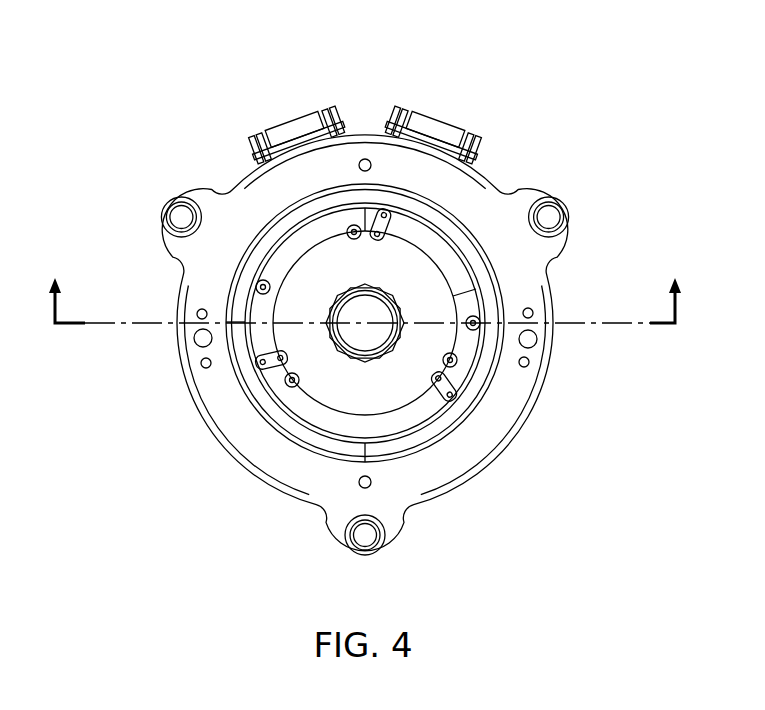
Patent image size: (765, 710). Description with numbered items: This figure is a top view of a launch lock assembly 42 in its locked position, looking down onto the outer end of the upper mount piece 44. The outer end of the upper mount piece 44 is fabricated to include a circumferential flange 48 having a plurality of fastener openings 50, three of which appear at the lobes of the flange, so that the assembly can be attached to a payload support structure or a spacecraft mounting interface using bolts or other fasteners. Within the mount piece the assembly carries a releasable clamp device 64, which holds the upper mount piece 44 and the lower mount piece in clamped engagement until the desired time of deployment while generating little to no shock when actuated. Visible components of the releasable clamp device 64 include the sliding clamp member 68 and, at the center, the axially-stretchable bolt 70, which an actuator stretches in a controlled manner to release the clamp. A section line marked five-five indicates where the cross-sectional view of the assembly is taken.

The launch lock assembly 42 is at (103, 103).
The upper mount piece 44 is at (498, 184).
The circumferential flange 48 is at (211, 403).
The fastener openings 50 is at (180, 214).
The releasable clamp device 64 is at (280, 266).
The sliding clamp member 68 is at (448, 252).
The axially-stretchable bolt 70 is at (349, 302).